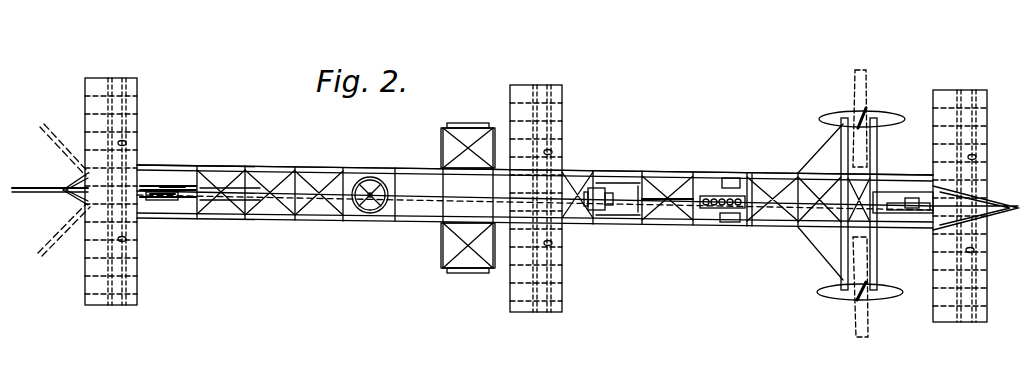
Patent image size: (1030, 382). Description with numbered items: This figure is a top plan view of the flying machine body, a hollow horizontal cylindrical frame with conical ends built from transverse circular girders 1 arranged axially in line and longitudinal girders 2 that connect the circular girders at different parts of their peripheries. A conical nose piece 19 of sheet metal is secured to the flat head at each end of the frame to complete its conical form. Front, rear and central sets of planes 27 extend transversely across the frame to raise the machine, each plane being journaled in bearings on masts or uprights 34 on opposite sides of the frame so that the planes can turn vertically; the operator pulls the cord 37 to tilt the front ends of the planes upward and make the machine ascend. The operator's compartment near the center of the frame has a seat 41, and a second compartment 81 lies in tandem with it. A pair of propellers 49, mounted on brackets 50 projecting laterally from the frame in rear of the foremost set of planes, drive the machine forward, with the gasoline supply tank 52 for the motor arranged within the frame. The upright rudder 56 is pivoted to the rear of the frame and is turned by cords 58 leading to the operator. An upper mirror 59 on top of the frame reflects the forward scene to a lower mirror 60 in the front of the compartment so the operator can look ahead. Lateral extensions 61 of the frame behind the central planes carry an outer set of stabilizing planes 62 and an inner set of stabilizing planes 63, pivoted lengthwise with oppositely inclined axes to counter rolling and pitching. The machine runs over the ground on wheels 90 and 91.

The transverse circular girders 1 is at (792, 225).
The longitudinal girders 2 is at (372, 221).
The conical nose piece 19 is at (63, 196).
The planes 27 is at (99, 80).
The masts or uprights 34 is at (126, 239).
The cord 37 is at (892, 192).
The seat 41 is at (606, 198).
The propellers 49 is at (868, 115).
The brackets 50 is at (878, 251).
The gasoline supply tank 52 is at (737, 180).
The upright rudder 56 is at (62, 188).
The cords 58 is at (219, 207).
The upper mirror 59 is at (598, 186).
The lower mirror 60 is at (648, 207).
The lateral extensions of the main frame 61 is at (443, 152).
The outer set of stabilizing planes 62 is at (458, 126).
The inner set of stabilizing planes 63 is at (468, 198).
The second compartment 81 is at (373, 182).
The wheel 90 is at (901, 210).
The wheel 91 is at (152, 187).